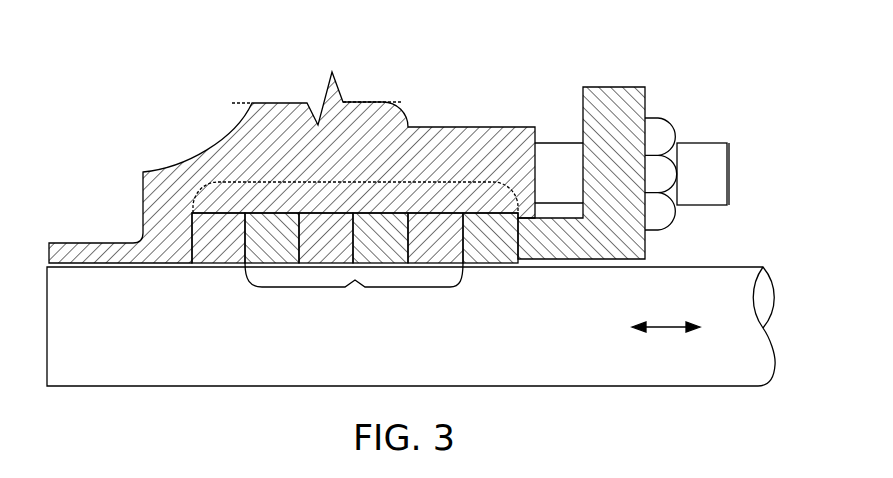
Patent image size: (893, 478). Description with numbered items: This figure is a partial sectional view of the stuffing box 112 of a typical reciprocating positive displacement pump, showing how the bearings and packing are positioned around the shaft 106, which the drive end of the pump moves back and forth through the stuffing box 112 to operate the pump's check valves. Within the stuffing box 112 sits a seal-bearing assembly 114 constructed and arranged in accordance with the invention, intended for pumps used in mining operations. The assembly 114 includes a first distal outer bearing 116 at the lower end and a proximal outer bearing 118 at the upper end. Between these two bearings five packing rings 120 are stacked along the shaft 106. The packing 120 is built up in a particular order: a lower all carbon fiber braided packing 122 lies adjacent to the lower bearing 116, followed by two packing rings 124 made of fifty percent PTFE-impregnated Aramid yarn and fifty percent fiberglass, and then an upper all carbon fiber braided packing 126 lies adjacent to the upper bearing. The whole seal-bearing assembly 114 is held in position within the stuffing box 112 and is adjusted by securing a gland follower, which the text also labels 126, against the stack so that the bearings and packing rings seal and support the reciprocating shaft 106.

The shaft 106 is at (737, 281).
The stuffing box 112 is at (467, 137).
The seal-bearing assembly 114 is at (358, 181).
The first distal outer bearing 116 is at (241, 253).
The proximal outer bearing 118 is at (514, 253).
The packing rings 120 is at (354, 292).
The lower all carbon fiber braided packing 122 is at (249, 253).
The packing rings of PTFE-impregnated Aramid yarn/fiberglass 124 is at (303, 253).
The upper all carbon fiber braided packing / gland follower 126 is at (459, 253).